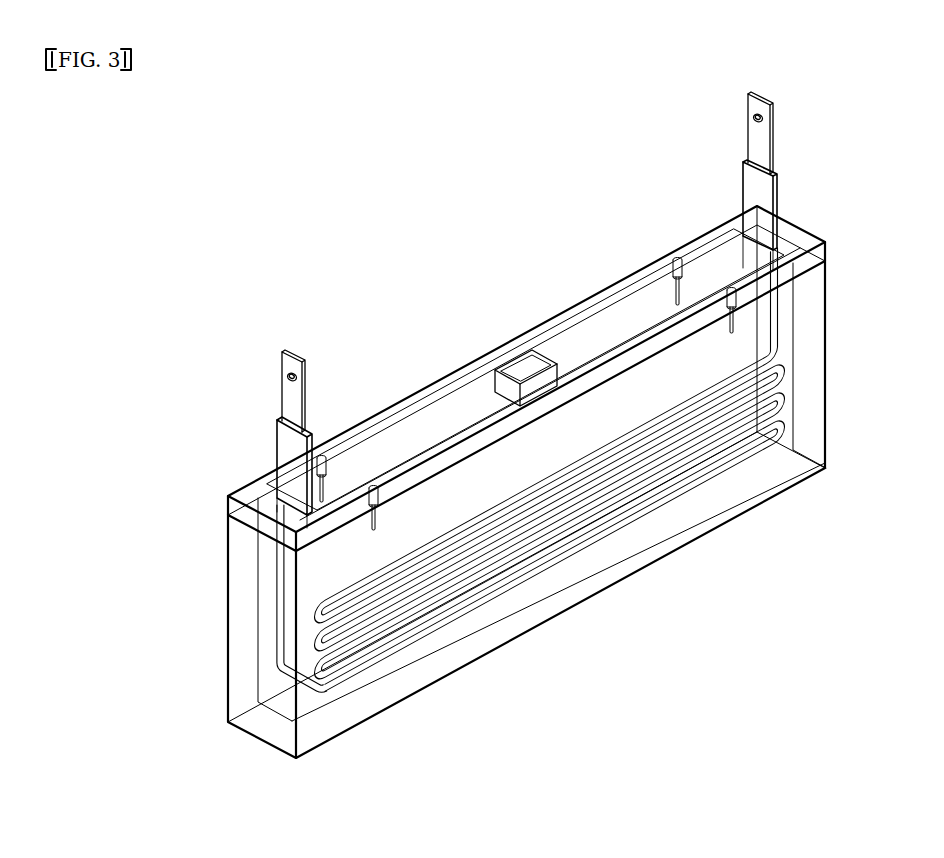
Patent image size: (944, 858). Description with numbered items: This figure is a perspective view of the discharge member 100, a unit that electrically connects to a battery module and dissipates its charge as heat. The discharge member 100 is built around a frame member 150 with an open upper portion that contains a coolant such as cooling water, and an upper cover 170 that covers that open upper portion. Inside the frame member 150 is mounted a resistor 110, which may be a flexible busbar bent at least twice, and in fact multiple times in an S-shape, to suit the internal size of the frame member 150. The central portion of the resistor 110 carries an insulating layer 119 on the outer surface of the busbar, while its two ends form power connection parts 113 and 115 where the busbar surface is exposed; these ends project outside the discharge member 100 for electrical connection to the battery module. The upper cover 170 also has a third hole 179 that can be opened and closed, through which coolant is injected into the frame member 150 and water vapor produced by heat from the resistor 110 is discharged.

The discharge member 100 is at (514, 133).
The resistor 110 is at (791, 399).
The power connection part 113 is at (289, 396).
The power connection part 115 is at (765, 139).
The insulating layer 119 is at (776, 196).
The frame member 150 is at (242, 679).
The upper cover 170 is at (404, 408).
The third hole 179 is at (515, 367).